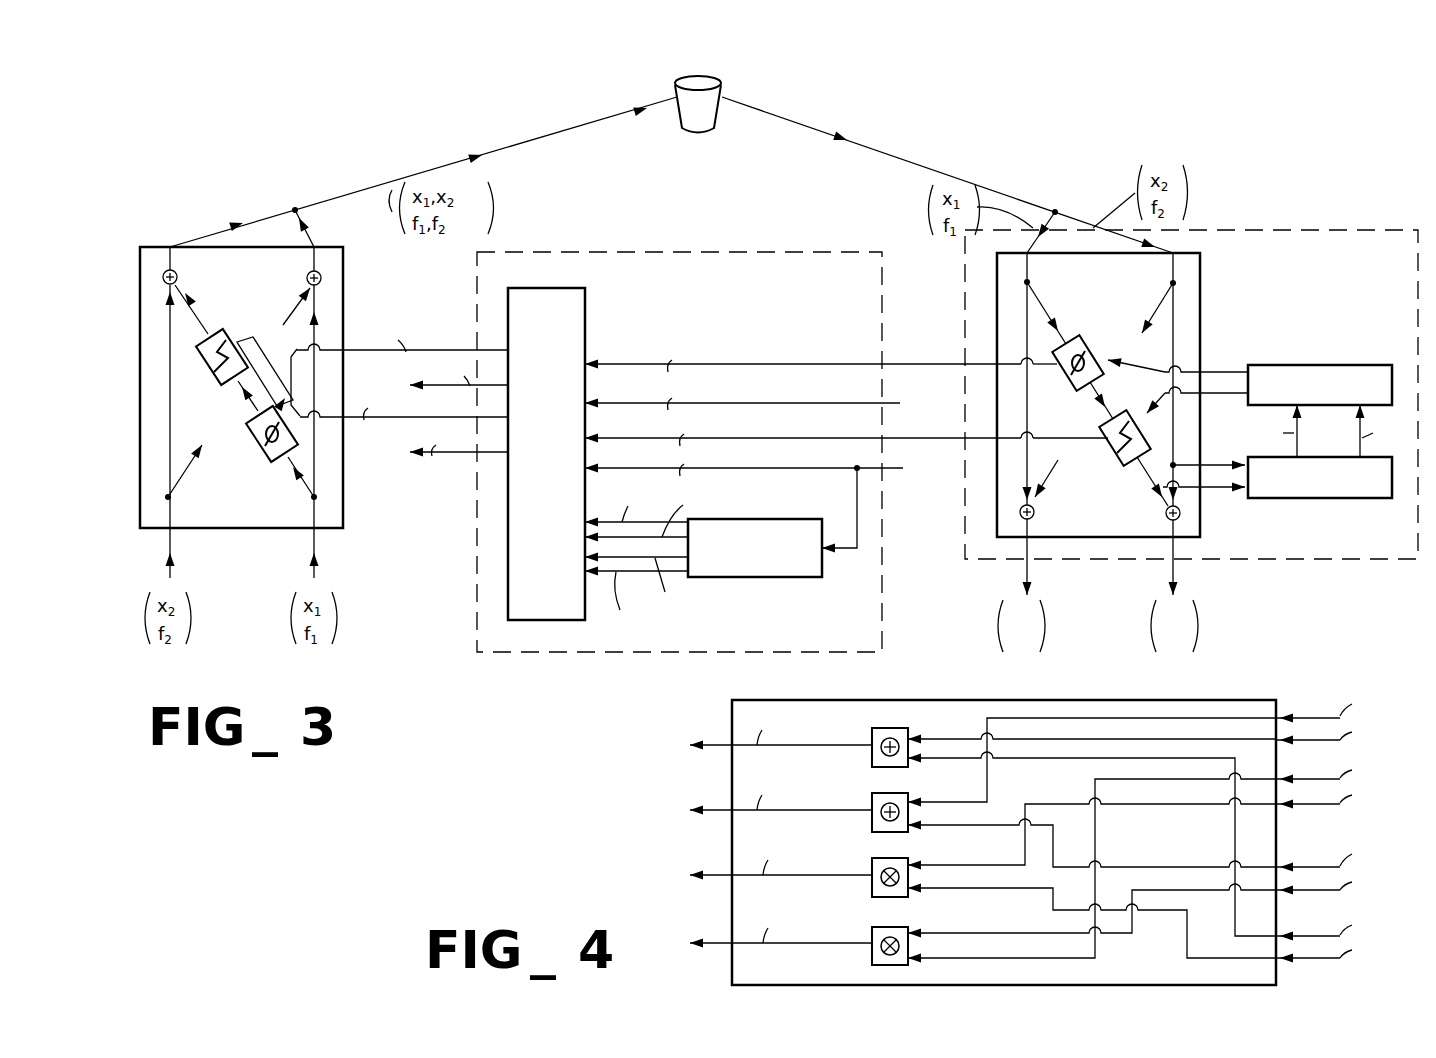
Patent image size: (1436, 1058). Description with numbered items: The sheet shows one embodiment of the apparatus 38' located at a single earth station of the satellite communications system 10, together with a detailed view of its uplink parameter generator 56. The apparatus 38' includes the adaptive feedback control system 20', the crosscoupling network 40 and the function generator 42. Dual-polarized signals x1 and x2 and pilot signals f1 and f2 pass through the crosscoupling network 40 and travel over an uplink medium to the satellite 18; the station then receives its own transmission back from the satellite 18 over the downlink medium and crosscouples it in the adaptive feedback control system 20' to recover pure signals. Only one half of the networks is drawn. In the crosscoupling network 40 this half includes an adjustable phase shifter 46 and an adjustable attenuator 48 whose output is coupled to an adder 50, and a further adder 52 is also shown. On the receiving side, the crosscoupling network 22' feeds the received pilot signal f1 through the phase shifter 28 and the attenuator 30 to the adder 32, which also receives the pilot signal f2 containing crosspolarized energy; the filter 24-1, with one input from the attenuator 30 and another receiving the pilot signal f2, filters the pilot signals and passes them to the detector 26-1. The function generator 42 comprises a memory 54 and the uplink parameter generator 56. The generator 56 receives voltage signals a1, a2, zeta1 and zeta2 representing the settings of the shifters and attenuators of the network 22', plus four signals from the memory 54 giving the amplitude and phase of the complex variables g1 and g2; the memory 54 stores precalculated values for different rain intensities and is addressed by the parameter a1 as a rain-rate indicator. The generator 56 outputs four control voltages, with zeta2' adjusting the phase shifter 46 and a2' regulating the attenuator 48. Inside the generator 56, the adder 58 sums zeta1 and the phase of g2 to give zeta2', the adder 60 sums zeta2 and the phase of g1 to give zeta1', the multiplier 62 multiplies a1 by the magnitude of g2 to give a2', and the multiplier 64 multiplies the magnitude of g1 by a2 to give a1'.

In FIG. 3, the satellite communications system 10 is at (671, 161).
In FIG. 3, the satellite 18 is at (722, 93).
In FIG. 3, the adaptive feedback control system 20' is at (1191, 422).
In FIG. 3, the crosscoupling network 22' is at (1148, 424).
In FIG. 3, the filter 24-1 is at (1298, 500).
In FIG. 3, the detector 26-1 is at (1342, 365).
In FIG. 3, the phase shifter 28 is at (1082, 345).
In FIG. 3, the attenuator 30 is at (1110, 462).
In FIG. 3, the adder 32 is at (1162, 515).
In FIG. 3, the apparatus 38' is at (208, 342).
In FIG. 3, the crosscoupling network 40 is at (138, 383).
In FIG. 3, the function generator 42 is at (735, 250).
In FIG. 3, the adjustable phase shifter 46 is at (252, 450).
In FIG. 3, the adjustable attenuator 48 is at (230, 307).
In FIG. 3, the adder 50 is at (178, 270).
In FIG. 3, the adder 52 is at (307, 273).
In FIG. 3, the memory 54 is at (782, 578).
In FIG. 3, the uplink parameter generator 56 is at (588, 316).
In FIG. 4, the uplink parameter generator 56 is at (1058, 700).
In FIG. 4, the adder 58 is at (908, 728).
In FIG. 4, the adder 60 is at (908, 793).
In FIG. 4, the multiplier 62 is at (908, 858).
In FIG. 4, the multiplier 64 is at (908, 927).